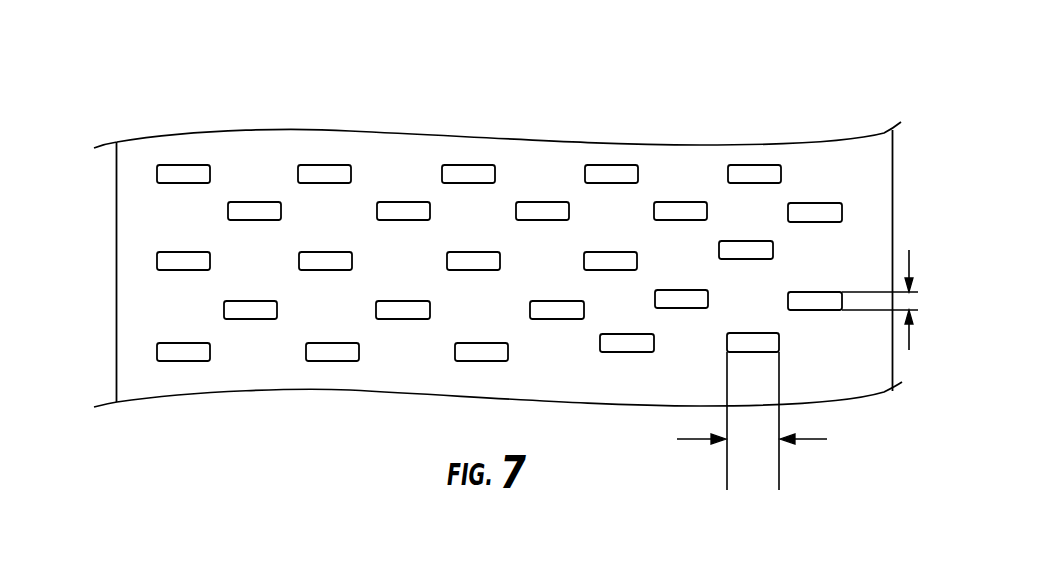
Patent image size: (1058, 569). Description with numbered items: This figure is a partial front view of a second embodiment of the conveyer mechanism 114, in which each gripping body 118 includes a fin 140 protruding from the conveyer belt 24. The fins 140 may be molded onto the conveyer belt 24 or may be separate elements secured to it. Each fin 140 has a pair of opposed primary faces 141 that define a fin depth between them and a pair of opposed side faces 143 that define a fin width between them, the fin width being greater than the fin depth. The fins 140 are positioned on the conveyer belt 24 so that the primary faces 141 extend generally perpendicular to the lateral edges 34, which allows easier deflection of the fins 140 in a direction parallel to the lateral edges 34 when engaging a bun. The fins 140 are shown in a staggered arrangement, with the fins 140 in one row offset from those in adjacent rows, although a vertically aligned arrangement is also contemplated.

The conveyer mechanism 114 is at (227, 54).
The conveyer belt 24 is at (142, 230).
The lateral edges 34 is at (892, 186).
The gripping body 118 is at (543, 210).
The fin 140 is at (499, 201).
The primary faces 141 is at (808, 291).
The side faces 143 is at (779, 343).